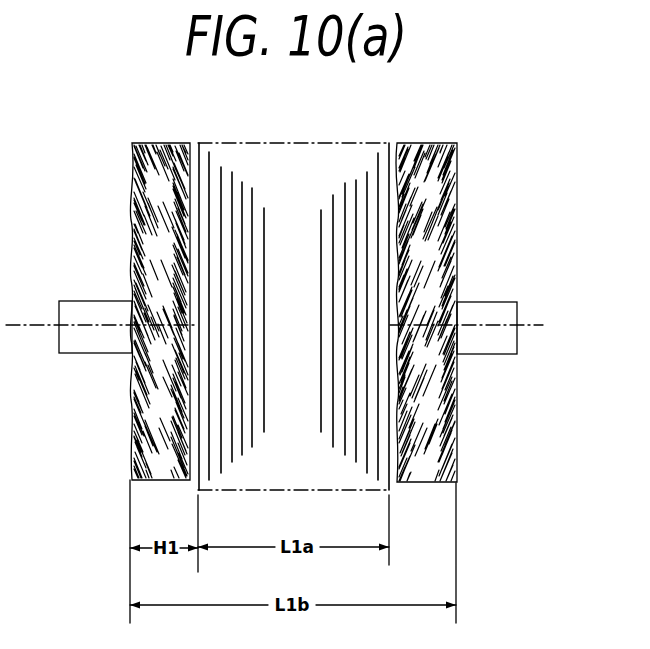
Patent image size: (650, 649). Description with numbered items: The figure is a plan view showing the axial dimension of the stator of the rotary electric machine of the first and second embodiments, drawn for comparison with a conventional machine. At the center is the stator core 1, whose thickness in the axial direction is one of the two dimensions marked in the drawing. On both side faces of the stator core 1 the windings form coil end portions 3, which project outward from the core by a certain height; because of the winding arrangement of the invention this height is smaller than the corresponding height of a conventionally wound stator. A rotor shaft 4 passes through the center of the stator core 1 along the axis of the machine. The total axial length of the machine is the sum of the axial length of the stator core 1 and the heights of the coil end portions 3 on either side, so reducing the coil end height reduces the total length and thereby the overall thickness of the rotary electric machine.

The stator core 1 is at (348, 150).
The coil end (stator winding end) 3 is at (447, 143).
The rotor shaft 4 is at (505, 300).